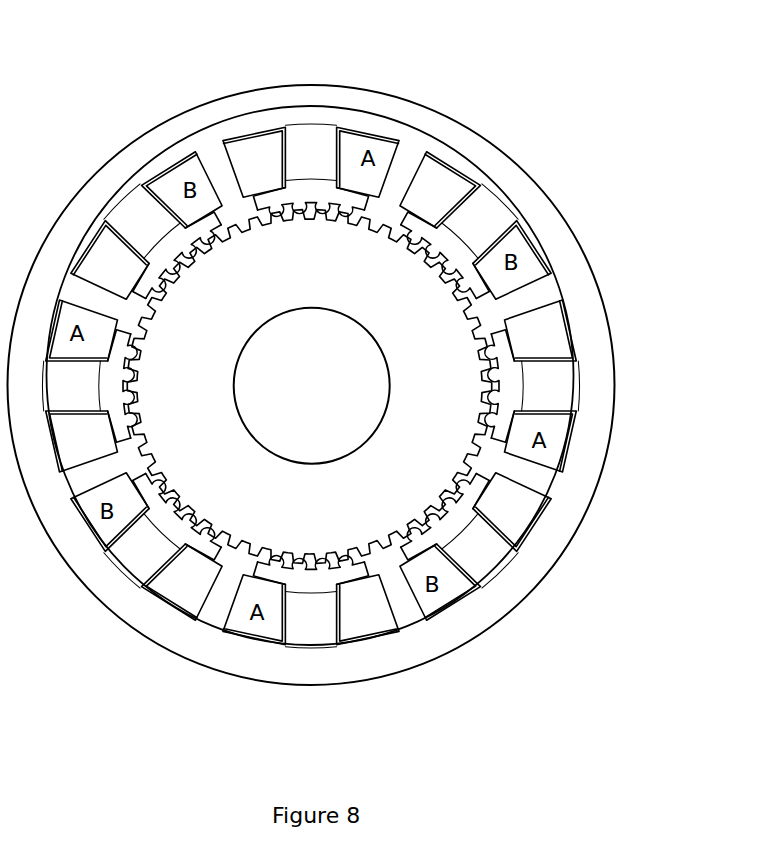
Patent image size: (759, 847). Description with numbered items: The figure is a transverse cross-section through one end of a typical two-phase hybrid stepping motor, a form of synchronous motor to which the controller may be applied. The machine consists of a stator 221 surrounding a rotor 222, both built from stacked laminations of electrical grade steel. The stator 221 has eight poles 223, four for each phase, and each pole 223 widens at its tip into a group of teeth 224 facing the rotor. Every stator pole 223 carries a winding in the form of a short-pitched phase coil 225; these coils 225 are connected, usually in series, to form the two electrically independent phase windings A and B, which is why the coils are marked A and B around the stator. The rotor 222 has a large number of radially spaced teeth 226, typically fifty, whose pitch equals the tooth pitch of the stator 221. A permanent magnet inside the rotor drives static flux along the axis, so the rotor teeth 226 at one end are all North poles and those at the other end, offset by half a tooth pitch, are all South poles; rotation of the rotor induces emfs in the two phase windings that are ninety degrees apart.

The stator 221 is at (321, 107).
The rotor 222 is at (370, 280).
The stator pole 223 is at (610, 349).
The teeth 224 is at (601, 347).
The phase coil 225 is at (360, 148).
The rotor teeth 226 is at (385, 557).